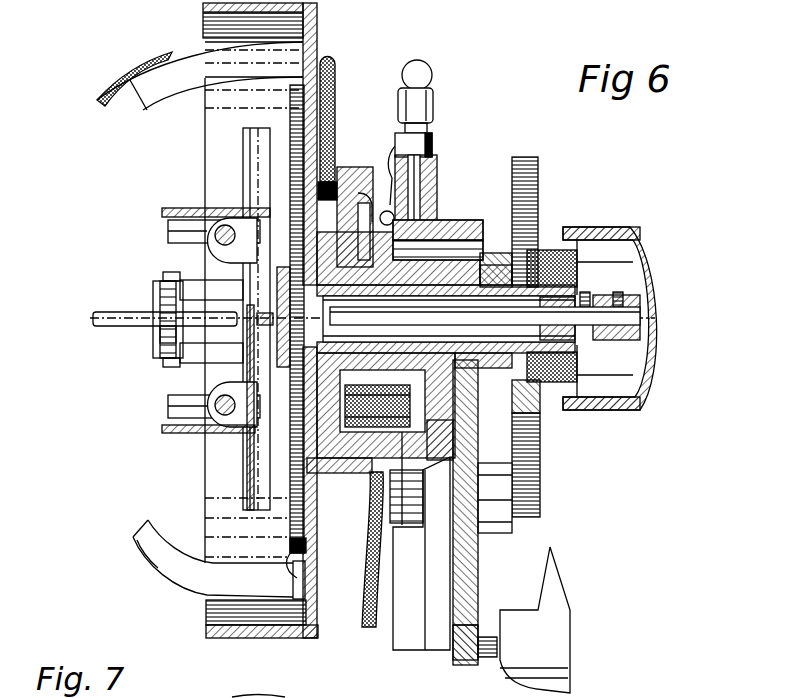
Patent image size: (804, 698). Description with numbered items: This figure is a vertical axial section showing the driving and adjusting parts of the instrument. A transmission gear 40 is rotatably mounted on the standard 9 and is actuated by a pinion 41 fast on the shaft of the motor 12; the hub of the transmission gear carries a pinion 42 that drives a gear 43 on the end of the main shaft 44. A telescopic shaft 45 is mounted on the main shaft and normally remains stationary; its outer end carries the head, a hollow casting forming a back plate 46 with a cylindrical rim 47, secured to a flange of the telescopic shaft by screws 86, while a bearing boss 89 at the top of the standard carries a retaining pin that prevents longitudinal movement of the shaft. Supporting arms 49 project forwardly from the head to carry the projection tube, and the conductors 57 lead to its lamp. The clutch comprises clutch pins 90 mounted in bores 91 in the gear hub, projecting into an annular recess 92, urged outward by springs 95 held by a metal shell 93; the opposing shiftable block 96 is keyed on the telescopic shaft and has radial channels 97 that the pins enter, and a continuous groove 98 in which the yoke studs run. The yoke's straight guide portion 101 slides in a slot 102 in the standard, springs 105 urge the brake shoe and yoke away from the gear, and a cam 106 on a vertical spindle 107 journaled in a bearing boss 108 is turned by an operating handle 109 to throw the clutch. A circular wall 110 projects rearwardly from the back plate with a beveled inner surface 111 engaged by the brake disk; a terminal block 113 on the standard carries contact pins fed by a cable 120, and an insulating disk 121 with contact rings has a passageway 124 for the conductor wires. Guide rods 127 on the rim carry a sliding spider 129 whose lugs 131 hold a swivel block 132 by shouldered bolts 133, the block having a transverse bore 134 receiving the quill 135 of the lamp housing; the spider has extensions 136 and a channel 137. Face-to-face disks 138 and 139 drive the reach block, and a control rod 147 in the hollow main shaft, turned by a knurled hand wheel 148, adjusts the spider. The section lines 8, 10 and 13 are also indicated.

In FIG. 7, the section line 8 is at (275, 689).
In FIG. 6, the standard 9 is at (155, 130).
In FIG. 6, the section line 10 is at (347, 175).
In FIG. 6, the motor 12 is at (565, 612).
In FIG. 6, the section line 13 is at (497, 180).
In FIG. 6, the transmission gear 40 is at (470, 583).
In FIG. 6, the pinion 41 is at (462, 660).
In FIG. 6, the pinion 42 is at (530, 513).
In FIG. 6, the gear 43 is at (520, 160).
In FIG. 6, the main or operating shaft 44 is at (573, 348).
In FIG. 6, the telescopic shaft 45 is at (441, 352).
In FIG. 6, the back plate 46 is at (318, 28).
In FIG. 6, the cylindrical flange or rim 47 is at (203, 6).
In FIG. 6, the supporting arms 49 is at (168, 82).
In FIG. 6, the conductors 57 is at (100, 84).
In FIG. 6, the screws 86 is at (300, 268).
In FIG. 6, the bearing boss 89 is at (300, 432).
In FIG. 6, the clutch pins 90 is at (548, 255).
In FIG. 6, the bores or sockets 91 is at (578, 228).
In FIG. 6, the annular recess 92 is at (540, 445).
In FIG. 6, the metal shell 93 is at (600, 228).
In FIG. 6, the springs 95 is at (577, 268).
In FIG. 6, the shiftable block 96 is at (513, 258).
In FIG. 6, the radial channels 97 is at (500, 275).
In FIG. 6, the continuous groove 98 is at (493, 255).
In FIG. 6, the straight guide portion 101 is at (457, 238).
In FIG. 6, the slot 102 is at (442, 187).
In FIG. 6, the springs 105 is at (380, 197).
In FIG. 6, the cam 106 is at (438, 152).
In FIG. 6, the vertical spindle 107 is at (438, 120).
In FIG. 6, the bearing boss 108 is at (398, 140).
In FIG. 6, the operating handle or lever 109 is at (413, 72).
In FIG. 6, the circular wall or flange 110 is at (337, 160).
In FIG. 6, the beveled inner surface 111 is at (360, 215).
In FIG. 6, the terminal block 113 is at (402, 525).
In FIG. 6, the cable 120 is at (363, 604).
In FIG. 6, the insulating disk 121 is at (292, 455).
In FIG. 6, the passageway 124 is at (300, 232).
In FIG. 6, the guide rods 127 is at (170, 232).
In FIG. 6, the sliding spider 129 is at (243, 367).
In FIG. 6, the lateral parallel lugs 131 is at (186, 285).
In FIG. 6, the swivel block 132 is at (160, 336).
In FIG. 6, the shouldered bolts 133 is at (163, 276).
In FIG. 6, the transverse bore 134 is at (155, 302).
In FIG. 6, the stud or quill 135 is at (95, 320).
In FIG. 6, the extensions 136 is at (248, 148).
In FIG. 6, the elongated groove or channel 137 is at (291, 516).
In FIG. 6, the disk 138 is at (308, 541).
In FIG. 6, the disk 139 is at (318, 578).
In FIG. 6, the control rod 147 is at (641, 318).
In FIG. 6, the knurled hand wheel 148 is at (645, 392).